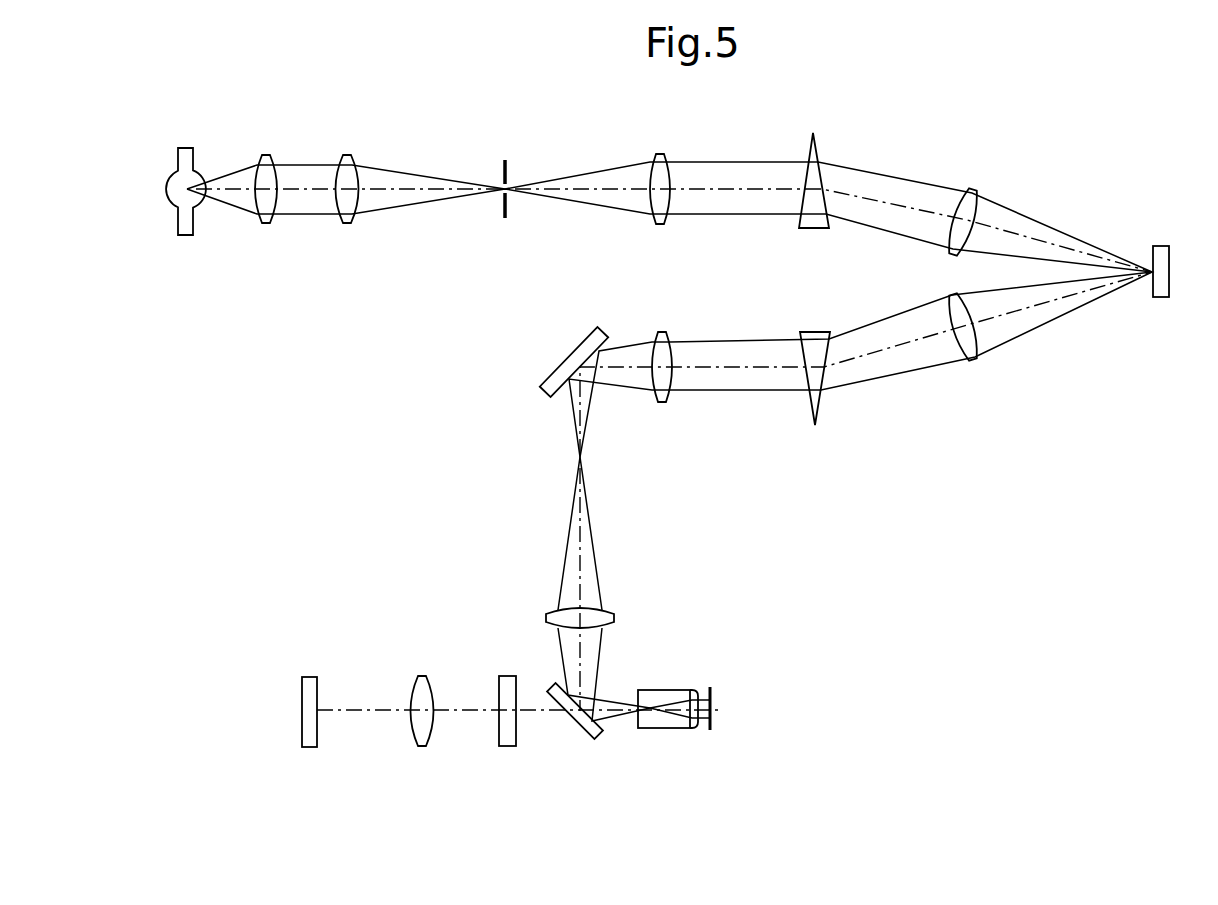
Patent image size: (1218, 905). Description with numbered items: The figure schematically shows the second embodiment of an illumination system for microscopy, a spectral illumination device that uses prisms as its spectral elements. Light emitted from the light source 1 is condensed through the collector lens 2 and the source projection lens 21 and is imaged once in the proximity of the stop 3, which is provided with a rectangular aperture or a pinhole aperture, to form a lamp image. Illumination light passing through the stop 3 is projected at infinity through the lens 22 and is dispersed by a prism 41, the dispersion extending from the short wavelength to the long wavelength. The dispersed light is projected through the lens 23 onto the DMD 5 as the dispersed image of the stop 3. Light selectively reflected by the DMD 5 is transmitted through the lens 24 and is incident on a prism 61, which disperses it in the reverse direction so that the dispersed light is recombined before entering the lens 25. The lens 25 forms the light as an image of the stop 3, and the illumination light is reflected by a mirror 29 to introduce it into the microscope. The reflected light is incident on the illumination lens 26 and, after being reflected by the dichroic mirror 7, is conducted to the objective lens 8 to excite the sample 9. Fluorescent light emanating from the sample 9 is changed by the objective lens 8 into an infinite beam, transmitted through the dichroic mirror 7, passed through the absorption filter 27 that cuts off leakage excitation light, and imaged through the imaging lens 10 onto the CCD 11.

The light source 1 is at (191, 160).
The collector lens 2 is at (268, 156).
The source projection lens 21 is at (345, 173).
The stop 3 is at (507, 168).
The lens 22 is at (661, 158).
The prism 41 is at (814, 158).
The lens 23 is at (967, 202).
The DMD 5 is at (1160, 252).
The lens 24 is at (967, 350).
The prism 61 is at (815, 377).
The lens 25 is at (665, 382).
The mirror 29 is at (578, 355).
The illumination lens 26 is at (595, 613).
The dichroic mirror 7 is at (591, 742).
The objective lens 8 is at (657, 700).
The sample 9 is at (717, 692).
The CCD 11 is at (312, 690).
The imaging lens 10 is at (423, 733).
The absorption filter 27 is at (509, 737).